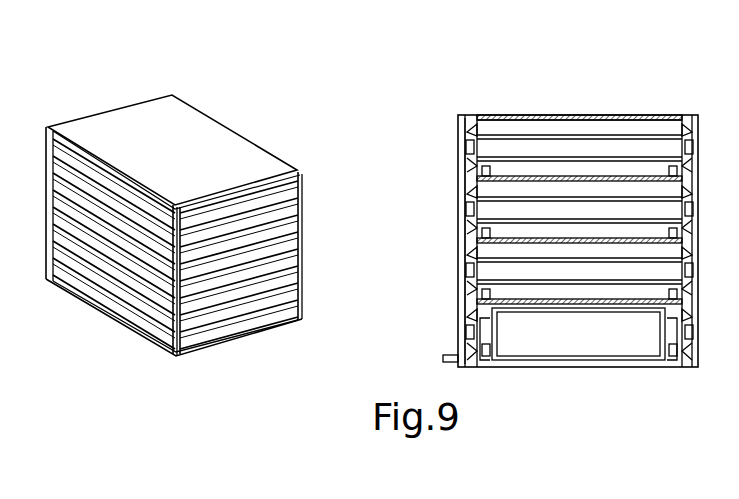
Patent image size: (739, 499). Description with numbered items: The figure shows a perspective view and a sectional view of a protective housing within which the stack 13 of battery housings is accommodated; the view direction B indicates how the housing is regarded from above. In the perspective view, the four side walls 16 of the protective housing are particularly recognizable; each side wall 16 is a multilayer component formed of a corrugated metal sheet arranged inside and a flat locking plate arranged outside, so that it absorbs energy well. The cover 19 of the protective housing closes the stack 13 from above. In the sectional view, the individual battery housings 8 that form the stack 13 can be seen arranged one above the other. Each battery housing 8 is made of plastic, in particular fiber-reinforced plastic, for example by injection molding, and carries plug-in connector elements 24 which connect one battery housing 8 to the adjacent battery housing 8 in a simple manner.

The battery module B is at (282, 203).
The plug-in connector element 24 is at (217, 87).
The cover 19 is at (180, 155).
The side wall 16 is at (147, 283).
The battery housing 8 is at (446, 142).
The stack of battery housings 13 is at (457, 195).